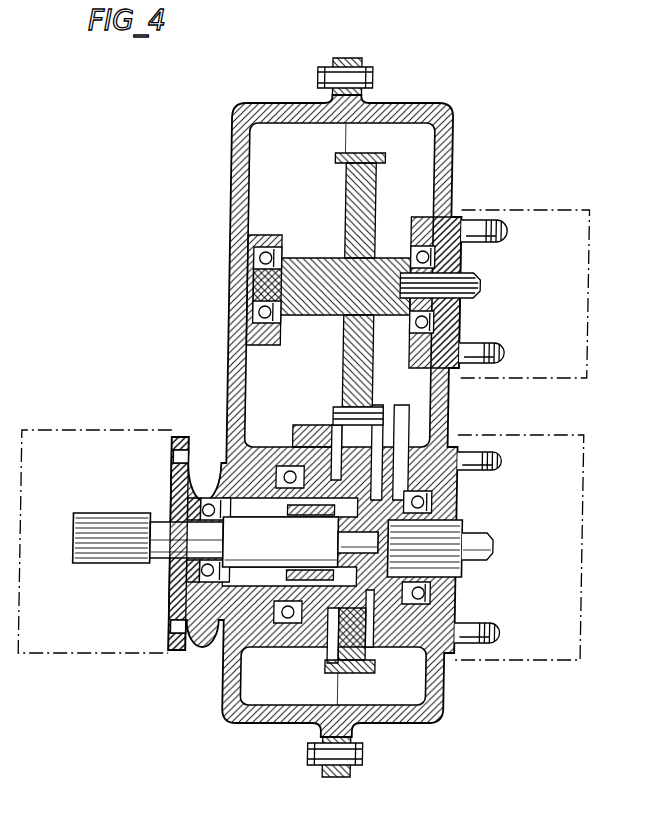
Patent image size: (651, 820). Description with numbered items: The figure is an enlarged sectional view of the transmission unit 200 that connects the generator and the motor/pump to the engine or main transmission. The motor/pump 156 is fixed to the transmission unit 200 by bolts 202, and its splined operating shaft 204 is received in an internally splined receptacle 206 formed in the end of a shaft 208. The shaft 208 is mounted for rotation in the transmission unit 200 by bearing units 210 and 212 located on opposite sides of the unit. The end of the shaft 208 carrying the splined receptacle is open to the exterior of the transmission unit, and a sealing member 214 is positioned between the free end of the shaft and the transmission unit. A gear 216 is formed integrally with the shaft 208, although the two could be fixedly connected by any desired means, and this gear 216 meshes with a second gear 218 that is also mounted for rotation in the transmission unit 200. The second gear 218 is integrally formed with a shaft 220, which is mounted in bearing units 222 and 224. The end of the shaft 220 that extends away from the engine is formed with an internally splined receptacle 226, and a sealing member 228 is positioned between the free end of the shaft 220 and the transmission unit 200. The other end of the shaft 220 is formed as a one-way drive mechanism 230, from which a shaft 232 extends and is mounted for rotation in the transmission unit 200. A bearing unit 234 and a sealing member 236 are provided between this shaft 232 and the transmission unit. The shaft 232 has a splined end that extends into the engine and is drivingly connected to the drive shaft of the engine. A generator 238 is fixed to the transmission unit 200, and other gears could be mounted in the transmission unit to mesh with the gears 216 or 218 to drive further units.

The motor/pump 156 is at (565, 210).
The transmission unit 200 is at (407, 108).
The bolts 202 is at (482, 228).
The splined operating shaft 204 is at (486, 285).
The internally splined receptacle 206 is at (401, 262).
The shaft 208 is at (302, 263).
The bearing unit 210 is at (250, 253).
The bearing unit 212 is at (468, 321).
The sealing member 214 is at (474, 252).
The gear 216 is at (360, 177).
The second gear 218 is at (350, 438).
The shaft 220 is at (402, 500).
The bearing unit 222 is at (316, 430).
The bearing unit 224 is at (437, 493).
The internally splined receptacle 226 is at (404, 595).
The sealing member 228 is at (440, 504).
The one-way drive mechanism 230 is at (235, 622).
The shaft 232 is at (302, 544).
The bearing unit 234 is at (216, 508).
The sealing member 236 is at (182, 510).
The generator 238 is at (545, 662).